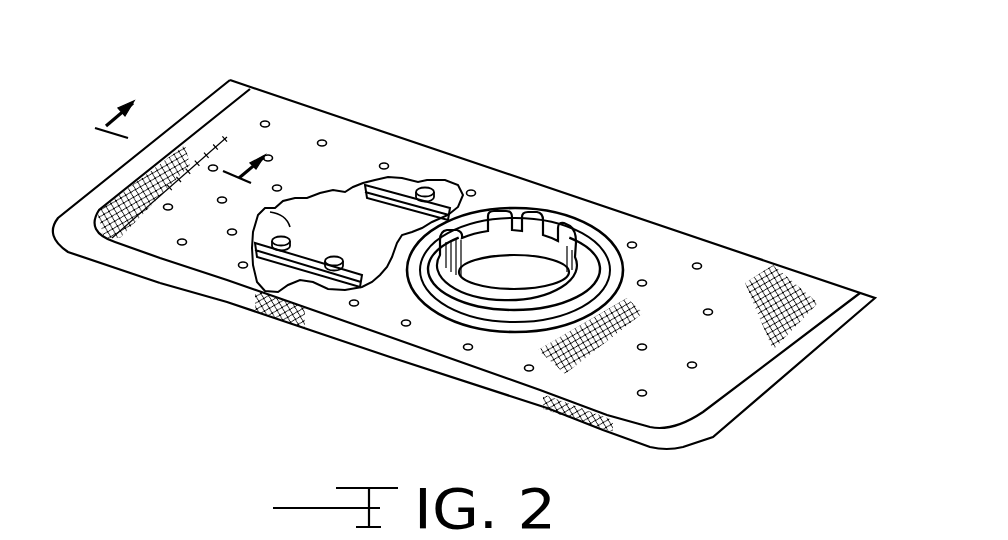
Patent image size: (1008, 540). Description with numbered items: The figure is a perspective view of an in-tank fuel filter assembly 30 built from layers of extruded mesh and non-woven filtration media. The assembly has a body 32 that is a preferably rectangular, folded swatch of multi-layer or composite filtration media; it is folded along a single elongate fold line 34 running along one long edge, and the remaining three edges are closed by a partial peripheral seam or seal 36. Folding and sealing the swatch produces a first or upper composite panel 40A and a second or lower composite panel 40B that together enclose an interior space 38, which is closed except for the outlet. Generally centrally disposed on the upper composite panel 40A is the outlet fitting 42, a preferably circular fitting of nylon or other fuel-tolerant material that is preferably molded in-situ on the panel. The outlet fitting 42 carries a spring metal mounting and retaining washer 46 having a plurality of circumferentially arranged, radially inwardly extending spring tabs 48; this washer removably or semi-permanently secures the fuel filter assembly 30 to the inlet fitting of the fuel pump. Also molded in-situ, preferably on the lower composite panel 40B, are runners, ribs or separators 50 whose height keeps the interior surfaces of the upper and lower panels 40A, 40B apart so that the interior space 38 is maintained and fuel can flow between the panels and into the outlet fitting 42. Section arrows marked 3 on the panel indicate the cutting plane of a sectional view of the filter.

The in-tank fuel filter assembly 30 is at (590, 90).
The body 32 is at (725, 373).
The fold line 34 is at (310, 107).
The peripheral seam or seal 36 is at (84, 242).
The interior space 38 is at (255, 226).
The first or upper composite panel 40A is at (283, 147).
The second or lower composite panel 40B is at (392, 257).
The outlet fitting 42 is at (611, 236).
The spring metal mounting and retaining washer 46 is at (579, 220).
The spring tabs 48 is at (522, 213).
The runners, ribs or separators 50 is at (427, 186).
The section line for FIG. 3 is at (160, 160).